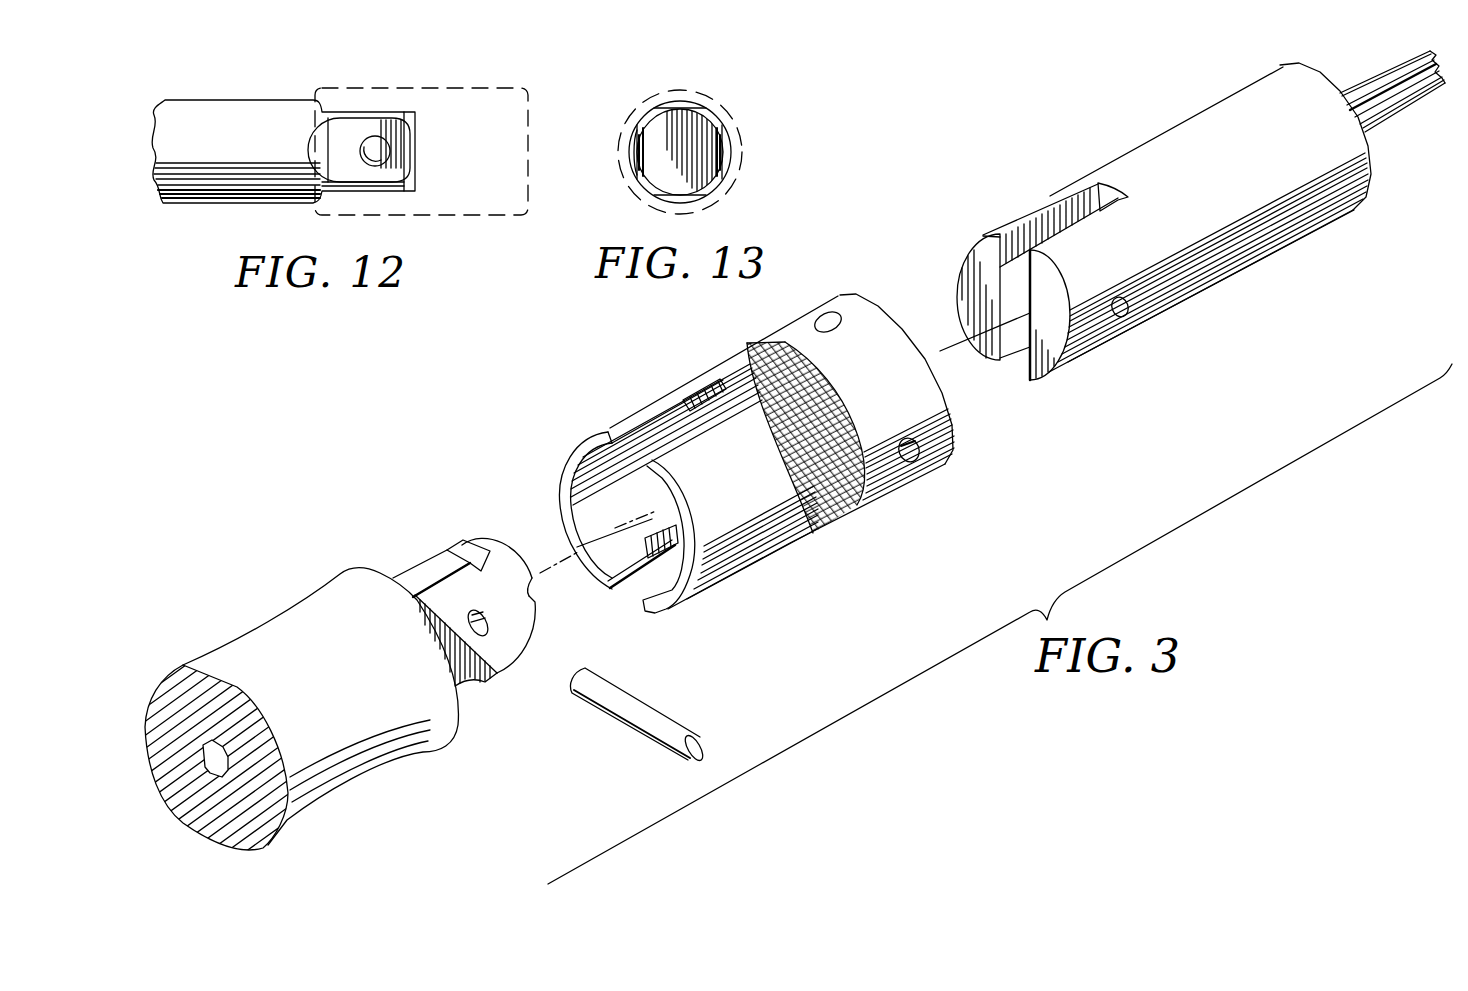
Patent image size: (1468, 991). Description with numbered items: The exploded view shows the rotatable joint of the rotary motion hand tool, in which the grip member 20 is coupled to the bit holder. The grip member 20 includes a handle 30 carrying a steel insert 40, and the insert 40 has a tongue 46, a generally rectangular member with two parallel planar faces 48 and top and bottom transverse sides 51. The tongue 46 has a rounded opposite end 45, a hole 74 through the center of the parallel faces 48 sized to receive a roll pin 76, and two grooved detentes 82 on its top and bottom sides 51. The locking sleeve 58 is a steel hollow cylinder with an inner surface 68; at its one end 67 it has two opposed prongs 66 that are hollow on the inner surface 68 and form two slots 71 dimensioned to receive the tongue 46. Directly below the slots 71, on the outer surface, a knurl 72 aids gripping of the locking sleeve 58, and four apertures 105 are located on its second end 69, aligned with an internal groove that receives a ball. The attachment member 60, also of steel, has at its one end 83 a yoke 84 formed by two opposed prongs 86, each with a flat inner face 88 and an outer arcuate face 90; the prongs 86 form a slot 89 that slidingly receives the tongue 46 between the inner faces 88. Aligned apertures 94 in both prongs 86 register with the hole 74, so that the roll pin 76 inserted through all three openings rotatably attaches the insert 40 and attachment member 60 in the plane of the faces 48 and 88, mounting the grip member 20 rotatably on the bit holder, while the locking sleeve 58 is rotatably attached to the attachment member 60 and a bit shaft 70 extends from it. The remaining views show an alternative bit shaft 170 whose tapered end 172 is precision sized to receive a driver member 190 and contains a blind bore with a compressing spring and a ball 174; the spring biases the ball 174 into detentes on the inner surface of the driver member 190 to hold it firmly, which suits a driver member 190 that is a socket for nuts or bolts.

In FIG. 3, the grip member 20 is at (772, 521).
In FIG. 3, the handle 30 is at (290, 620).
In FIG. 3, the insert 40 is at (479, 614).
In FIG. 3, the opposite end 45 is at (535, 600).
In FIG. 3, the tongue 46 is at (497, 540).
In FIG. 3, the parallel planar faces 48 is at (505, 630).
In FIG. 3, the top and bottom transverse sides 51 is at (418, 575).
In FIG. 3, the locking sleeve 58 is at (760, 445).
In FIG. 3, the attachment member 60 is at (1191, 252).
In FIG. 3, the prongs 66 is at (648, 407).
In FIG. 3, the one end 67 is at (590, 440).
In FIG. 3, the inner surface 68 is at (610, 480).
In FIG. 3, the second end 69 is at (878, 316).
In FIG. 3, the bit shaft 70 is at (1393, 120).
In FIG. 3, the slots 71 is at (712, 400).
In FIG. 3, the knurl 72 is at (758, 356).
In FIG. 3, the hole 74 is at (488, 623).
In FIG. 3, the roll pin 76 is at (650, 710).
In FIG. 3, the grooved detentes 82 is at (473, 545).
In FIG. 3, the one end 83 is at (1052, 392).
In FIG. 3, the yoke 84 is at (1012, 385).
In FIG. 3, the prongs 86 is at (993, 230).
In FIG. 3, the flat inner face 88 is at (1067, 195).
In FIG. 3, the slot 89 is at (1100, 182).
In FIG. 3, the outer arcuate face 90 is at (1050, 196).
In FIG. 3, the apertures 94 is at (1125, 315).
In FIG. 3, the apertures 105 is at (835, 315).
In FIG. 12, the bit shaft 170 is at (207, 108).
In FIG. 13, the bit shaft 170 is at (733, 153).
In FIG. 12, the tapered end 172 is at (364, 135).
In FIG. 13, the tapered end 172 is at (660, 108).
In FIG. 12, the ball 174 is at (377, 146).
In FIG. 13, the ball 174 is at (630, 140).
In FIG. 12, the driver member 190 is at (503, 92).
In FIG. 13, the driver member 190 is at (735, 128).